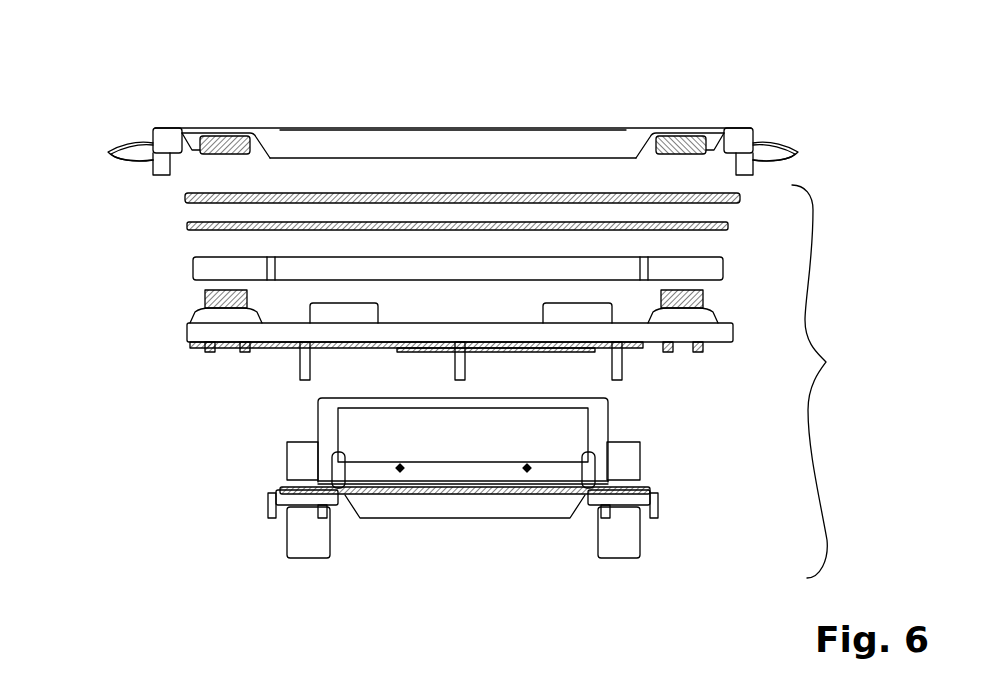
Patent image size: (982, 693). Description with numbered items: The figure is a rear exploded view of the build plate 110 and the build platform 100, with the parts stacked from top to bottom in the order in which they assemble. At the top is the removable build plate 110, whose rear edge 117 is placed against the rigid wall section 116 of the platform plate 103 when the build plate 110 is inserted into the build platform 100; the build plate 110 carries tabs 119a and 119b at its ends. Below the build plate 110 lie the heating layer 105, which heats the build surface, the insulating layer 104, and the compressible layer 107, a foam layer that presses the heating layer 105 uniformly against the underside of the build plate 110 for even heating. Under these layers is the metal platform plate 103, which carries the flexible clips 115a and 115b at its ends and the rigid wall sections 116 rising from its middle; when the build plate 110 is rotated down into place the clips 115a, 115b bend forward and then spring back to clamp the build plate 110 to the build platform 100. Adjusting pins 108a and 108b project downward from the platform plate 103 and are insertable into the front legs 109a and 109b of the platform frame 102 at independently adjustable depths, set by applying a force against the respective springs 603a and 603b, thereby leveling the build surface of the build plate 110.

The build platform 100 is at (834, 381).
The platform frame 102 is at (270, 496).
The platform plate 103 is at (187, 332).
The insulating layer 104 is at (187, 226).
The heating layer 105 is at (185, 198).
The compressible layer 107 is at (193, 268).
The adjusting pin 108a is at (622, 365).
The adjusting pin 108b is at (300, 365).
The front leg 109a is at (640, 540).
The front leg 109b is at (295, 540).
The build plate 110 is at (388, 148).
The flexible clip 115a is at (703, 298).
The flexible clip 115b is at (205, 298).
The rigid wall section 116 is at (545, 312).
The rear edge 117 is at (510, 147).
The lid hook tab 119a is at (788, 149).
The lid hook tab 119b is at (118, 149).
The spring 603a is at (600, 482).
The spring 603b is at (303, 482).